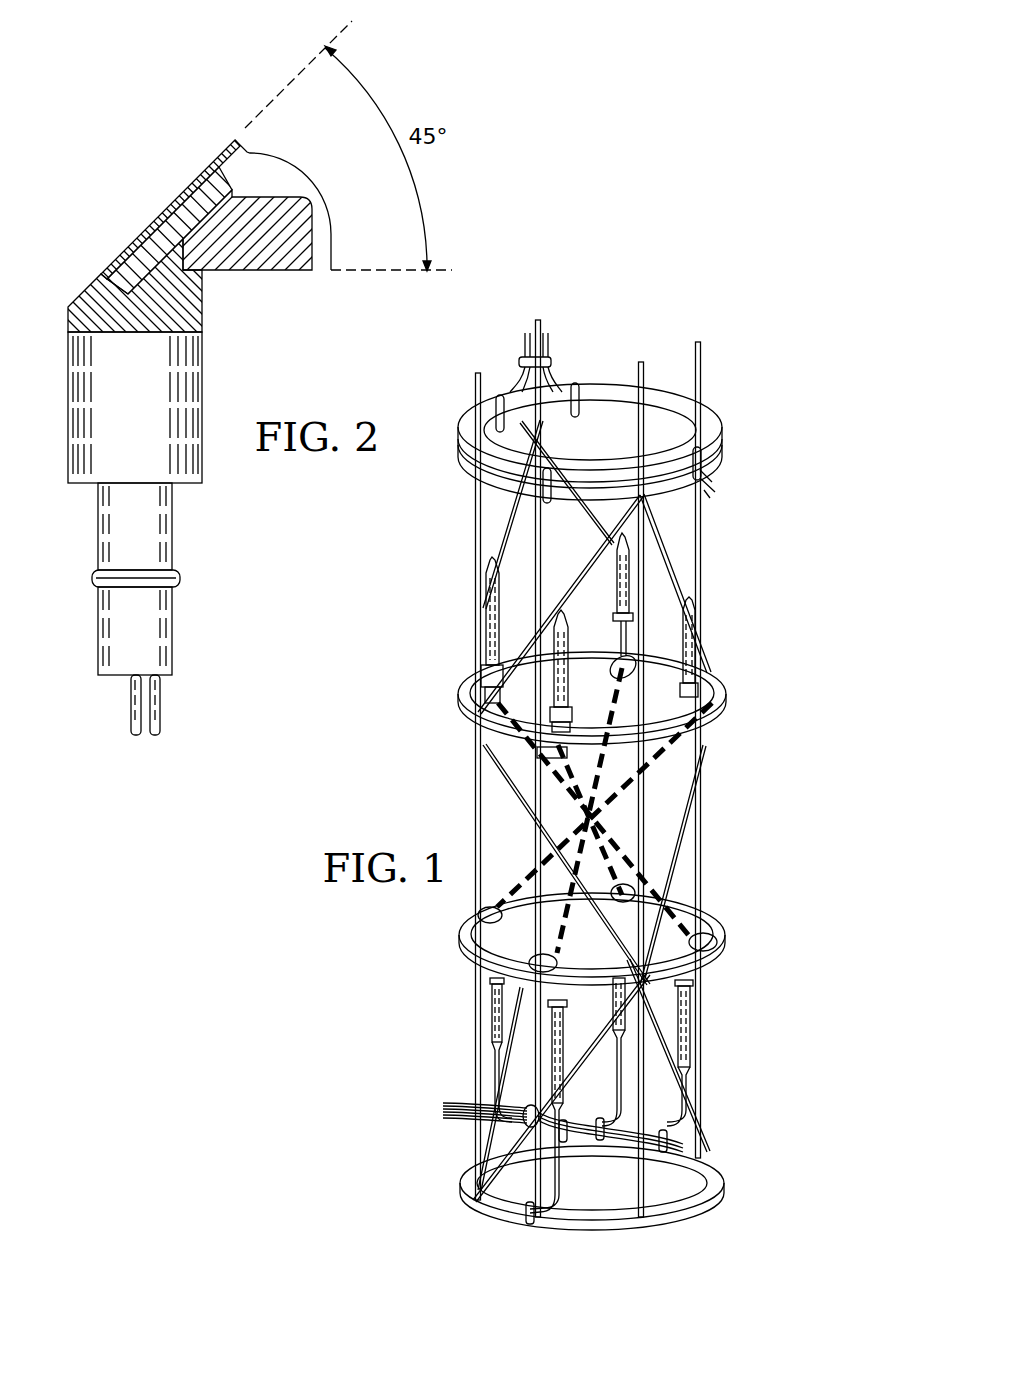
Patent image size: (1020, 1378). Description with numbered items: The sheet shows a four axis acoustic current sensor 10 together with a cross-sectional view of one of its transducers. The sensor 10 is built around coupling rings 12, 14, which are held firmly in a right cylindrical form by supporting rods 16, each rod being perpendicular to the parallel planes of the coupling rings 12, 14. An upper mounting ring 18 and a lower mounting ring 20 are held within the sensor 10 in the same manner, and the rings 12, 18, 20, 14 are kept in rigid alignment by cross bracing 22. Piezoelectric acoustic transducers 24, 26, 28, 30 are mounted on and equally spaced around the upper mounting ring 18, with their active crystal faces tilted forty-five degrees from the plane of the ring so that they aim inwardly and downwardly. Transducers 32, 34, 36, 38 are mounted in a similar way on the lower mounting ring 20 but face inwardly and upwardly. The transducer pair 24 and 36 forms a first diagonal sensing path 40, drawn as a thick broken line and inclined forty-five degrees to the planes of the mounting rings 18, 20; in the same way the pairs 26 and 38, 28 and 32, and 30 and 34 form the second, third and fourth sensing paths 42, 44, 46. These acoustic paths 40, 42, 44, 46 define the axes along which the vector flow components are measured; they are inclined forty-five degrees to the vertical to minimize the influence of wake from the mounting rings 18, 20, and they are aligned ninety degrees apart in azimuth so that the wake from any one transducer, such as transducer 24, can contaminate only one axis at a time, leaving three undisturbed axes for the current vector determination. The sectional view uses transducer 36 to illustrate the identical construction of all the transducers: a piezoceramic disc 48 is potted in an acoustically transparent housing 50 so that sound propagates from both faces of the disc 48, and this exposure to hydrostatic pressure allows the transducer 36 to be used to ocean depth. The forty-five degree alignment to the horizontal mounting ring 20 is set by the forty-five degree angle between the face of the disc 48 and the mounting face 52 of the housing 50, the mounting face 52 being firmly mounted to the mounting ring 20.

In FIG. 1, the four axis acoustic current sensor 10 is at (428, 1124).
In FIG. 1, the coupling ring 12 is at (728, 437).
In FIG. 1, the coupling ring 14 is at (728, 1182).
In FIG. 1, the supporting rods 16 is at (482, 372).
In FIG. 1, the upper mounting ring 18 is at (728, 702).
In FIG. 1, the lower mounting ring 20 is at (728, 937).
In FIG. 1, the cross bracing 22 is at (572, 466).
In FIG. 2, the piezoelectric acoustic transducer 24 is at (46, 379).
In FIG. 1, the piezoelectric acoustic transducer 24 is at (486, 612).
In FIG. 1, the piezoelectric acoustic transducer 26 is at (615, 563).
In FIG. 1, the piezoelectric acoustic transducer 28 is at (694, 630).
In FIG. 1, the piezoelectric acoustic transducer 30 is at (566, 641).
In FIG. 1, the acoustic transducer 32 is at (492, 1020).
In FIG. 1, the acoustic transducer 34 is at (625, 953).
In FIG. 1, the acoustic piezoceramic transducer 36 is at (693, 1036).
In FIG. 1, the acoustic transducer 38 is at (563, 1045).
In FIG. 1, the first diagonal sensing path 40 is at (512, 718).
In FIG. 1, the second sensing path 42 is at (610, 702).
In FIG. 1, the third sensing path 44 is at (657, 763).
In FIG. 1, the fourth sensing path 46 is at (583, 760).
In FIG. 2, the piezoceramic disc 48 is at (224, 172).
In FIG. 2, the acoustically transparent housing 50 is at (68, 318).
In FIG. 2, the mounting face 52 is at (262, 272).